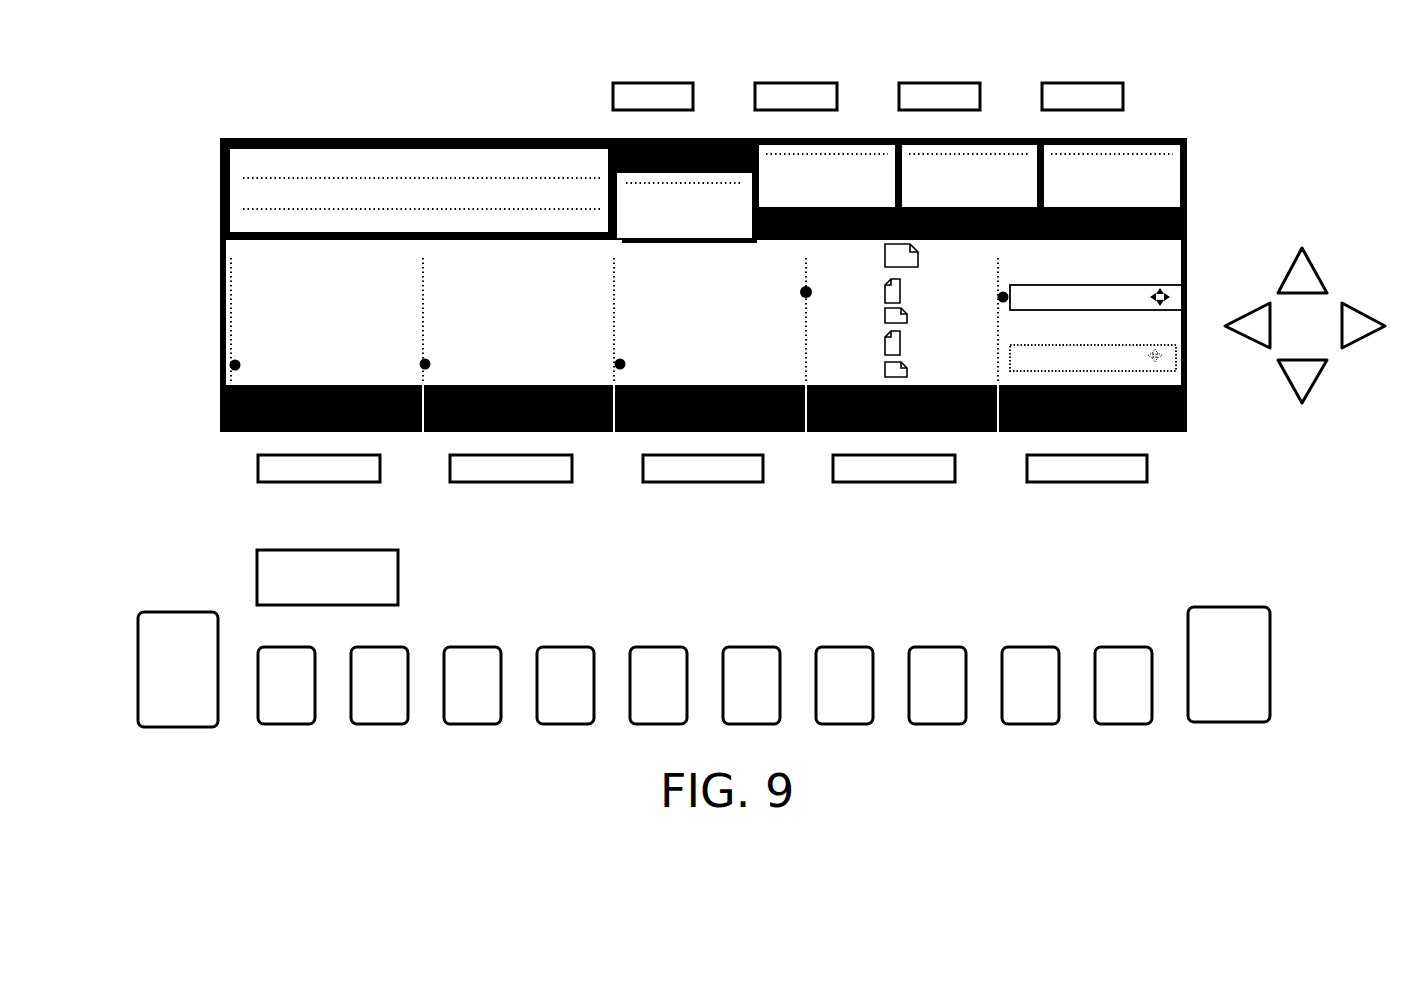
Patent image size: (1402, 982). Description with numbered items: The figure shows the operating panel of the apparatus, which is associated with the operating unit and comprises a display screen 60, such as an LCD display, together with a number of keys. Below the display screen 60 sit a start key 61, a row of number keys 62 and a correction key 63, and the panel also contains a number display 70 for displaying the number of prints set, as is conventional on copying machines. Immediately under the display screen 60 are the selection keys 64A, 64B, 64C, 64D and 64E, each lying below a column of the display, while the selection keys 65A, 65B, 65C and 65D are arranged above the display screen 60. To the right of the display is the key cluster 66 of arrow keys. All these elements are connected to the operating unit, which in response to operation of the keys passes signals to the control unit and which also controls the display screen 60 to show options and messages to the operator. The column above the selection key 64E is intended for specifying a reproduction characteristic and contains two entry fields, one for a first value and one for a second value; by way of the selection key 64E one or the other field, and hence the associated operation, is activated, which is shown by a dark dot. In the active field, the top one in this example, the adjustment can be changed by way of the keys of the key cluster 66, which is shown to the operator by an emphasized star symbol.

The display screen 60 is at (222, 322).
The start key 61 is at (138, 682).
The number keys 62 is at (758, 611).
The correction key 63 is at (1225, 607).
The selection key 64A is at (283, 482).
The selection key 64B is at (475, 482).
The selection key 64C is at (668, 482).
The selection key 64D is at (858, 482).
The selection key 64E is at (1052, 482).
The selection key 65A is at (622, 83).
The selection key 65B is at (774, 83).
The selection key 65C is at (922, 83).
The selection key 65D is at (1062, 83).
The key cluster 66 is at (1291, 232).
The number display 70 is at (398, 590).